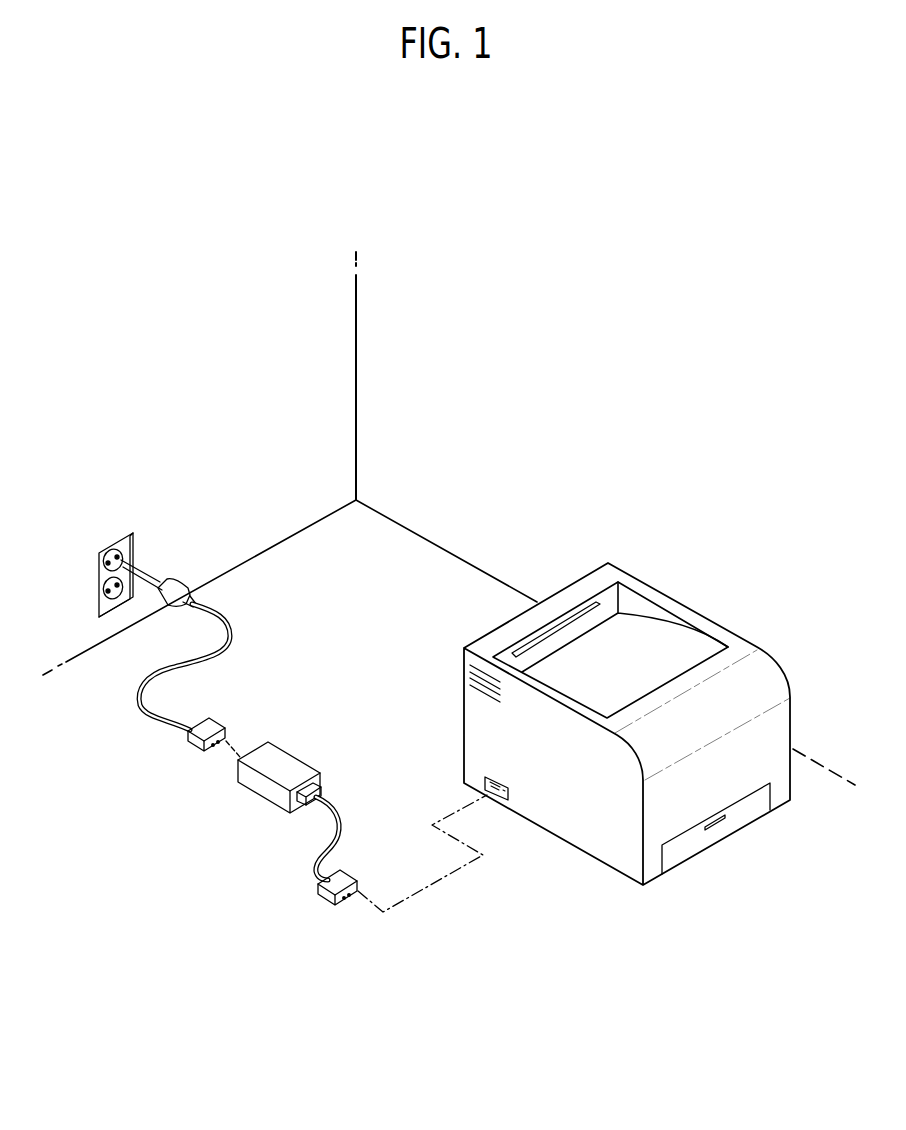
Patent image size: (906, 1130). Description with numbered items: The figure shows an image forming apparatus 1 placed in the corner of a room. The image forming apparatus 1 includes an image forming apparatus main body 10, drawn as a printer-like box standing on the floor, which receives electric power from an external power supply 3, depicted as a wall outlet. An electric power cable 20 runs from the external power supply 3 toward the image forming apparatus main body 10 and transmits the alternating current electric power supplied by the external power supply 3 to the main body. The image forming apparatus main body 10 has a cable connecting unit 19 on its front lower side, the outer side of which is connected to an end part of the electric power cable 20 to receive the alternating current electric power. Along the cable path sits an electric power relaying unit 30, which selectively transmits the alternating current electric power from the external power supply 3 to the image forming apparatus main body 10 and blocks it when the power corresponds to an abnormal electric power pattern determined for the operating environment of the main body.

The image forming apparatus 1 is at (492, 435).
The external power supply 3 is at (95, 536).
The image forming apparatus main body 10 is at (706, 591).
The cable connecting unit 19 is at (489, 786).
The electric power cable 20 is at (232, 624).
The electric power relaying unit 30 is at (250, 812).